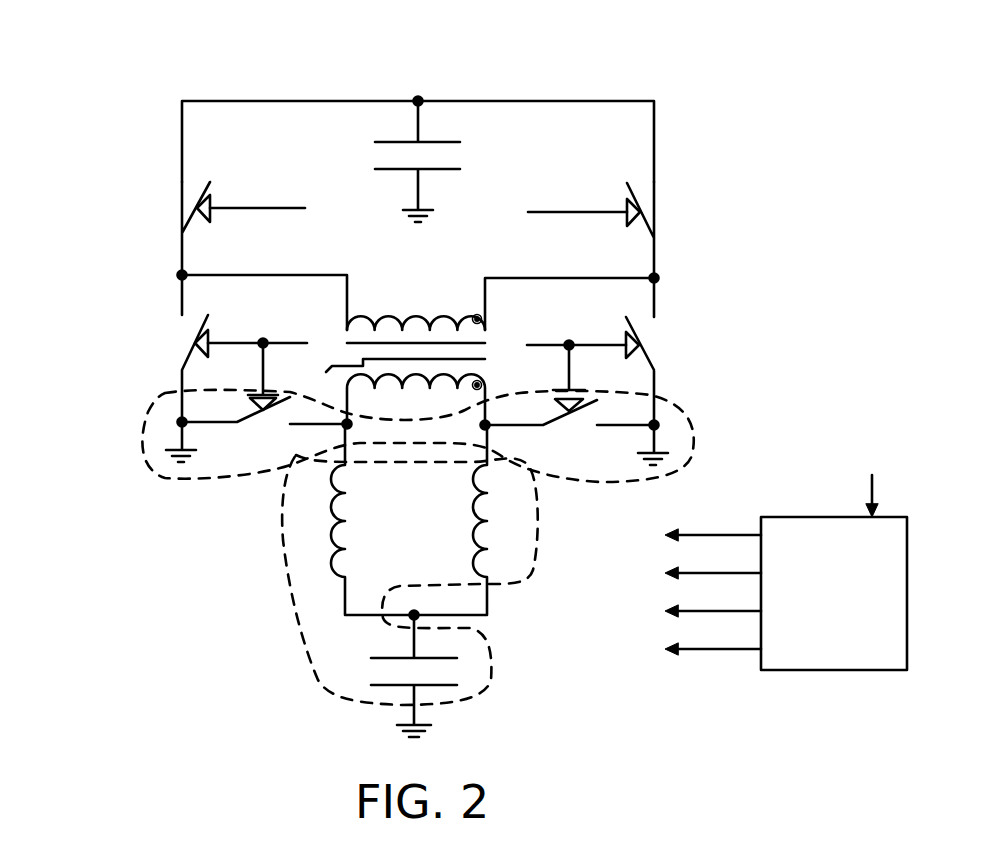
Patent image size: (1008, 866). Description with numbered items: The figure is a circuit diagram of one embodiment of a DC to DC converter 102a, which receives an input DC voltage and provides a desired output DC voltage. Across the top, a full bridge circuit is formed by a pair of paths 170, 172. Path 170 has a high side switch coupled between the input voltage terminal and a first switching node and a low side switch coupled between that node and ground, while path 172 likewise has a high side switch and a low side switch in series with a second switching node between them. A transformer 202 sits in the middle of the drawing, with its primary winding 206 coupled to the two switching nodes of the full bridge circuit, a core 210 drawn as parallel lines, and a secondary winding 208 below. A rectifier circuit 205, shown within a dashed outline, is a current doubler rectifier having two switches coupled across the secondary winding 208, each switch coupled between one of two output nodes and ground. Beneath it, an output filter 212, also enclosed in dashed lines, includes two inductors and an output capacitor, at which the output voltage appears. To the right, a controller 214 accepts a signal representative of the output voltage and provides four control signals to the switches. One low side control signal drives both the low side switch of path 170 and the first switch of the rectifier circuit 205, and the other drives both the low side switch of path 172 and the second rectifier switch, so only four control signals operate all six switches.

The DC to DC converter 102a is at (98, 78).
The path 170 is at (166, 257).
The path 172 is at (668, 259).
The transformer 202 is at (418, 337).
The primary winding 206 is at (386, 326).
The secondary winding 208 is at (390, 378).
The core 210 is at (318, 391).
The rectifier circuit 205 is at (152, 414).
The output filter 212 is at (316, 640).
The controller 214 is at (790, 671).